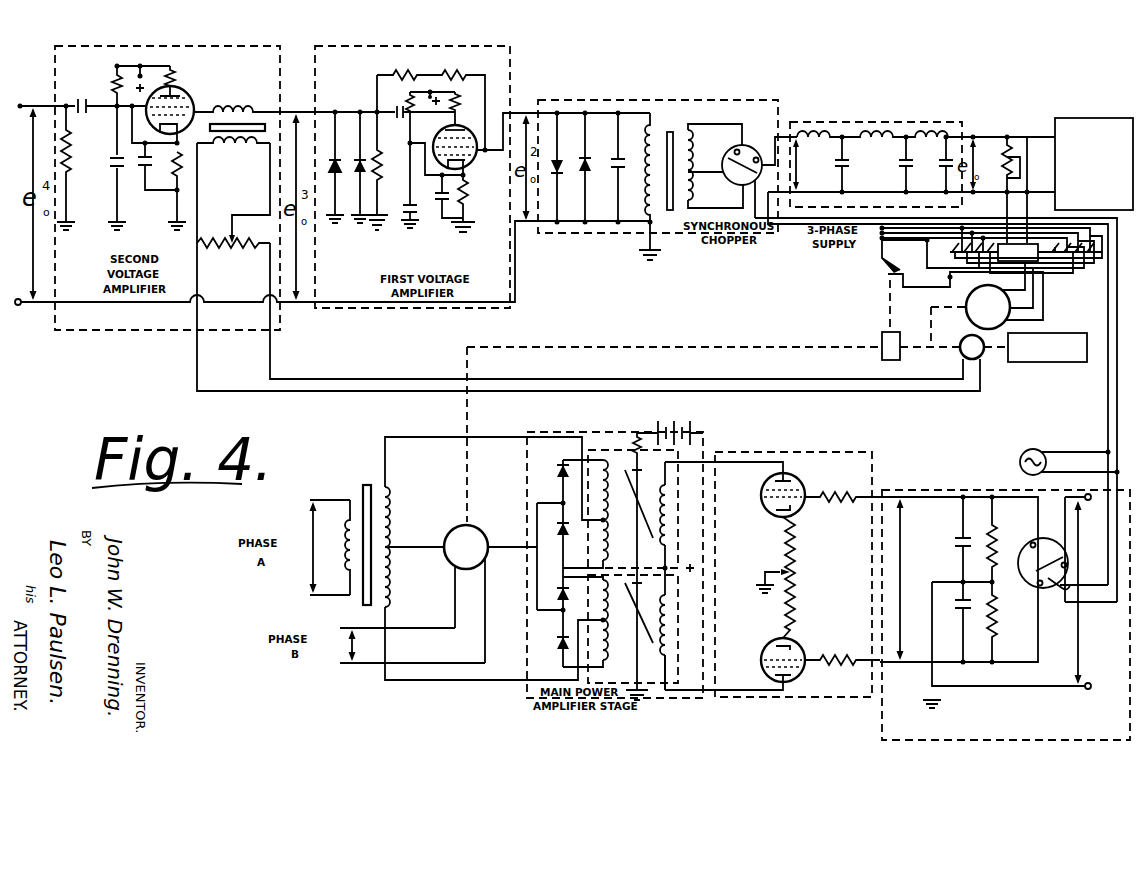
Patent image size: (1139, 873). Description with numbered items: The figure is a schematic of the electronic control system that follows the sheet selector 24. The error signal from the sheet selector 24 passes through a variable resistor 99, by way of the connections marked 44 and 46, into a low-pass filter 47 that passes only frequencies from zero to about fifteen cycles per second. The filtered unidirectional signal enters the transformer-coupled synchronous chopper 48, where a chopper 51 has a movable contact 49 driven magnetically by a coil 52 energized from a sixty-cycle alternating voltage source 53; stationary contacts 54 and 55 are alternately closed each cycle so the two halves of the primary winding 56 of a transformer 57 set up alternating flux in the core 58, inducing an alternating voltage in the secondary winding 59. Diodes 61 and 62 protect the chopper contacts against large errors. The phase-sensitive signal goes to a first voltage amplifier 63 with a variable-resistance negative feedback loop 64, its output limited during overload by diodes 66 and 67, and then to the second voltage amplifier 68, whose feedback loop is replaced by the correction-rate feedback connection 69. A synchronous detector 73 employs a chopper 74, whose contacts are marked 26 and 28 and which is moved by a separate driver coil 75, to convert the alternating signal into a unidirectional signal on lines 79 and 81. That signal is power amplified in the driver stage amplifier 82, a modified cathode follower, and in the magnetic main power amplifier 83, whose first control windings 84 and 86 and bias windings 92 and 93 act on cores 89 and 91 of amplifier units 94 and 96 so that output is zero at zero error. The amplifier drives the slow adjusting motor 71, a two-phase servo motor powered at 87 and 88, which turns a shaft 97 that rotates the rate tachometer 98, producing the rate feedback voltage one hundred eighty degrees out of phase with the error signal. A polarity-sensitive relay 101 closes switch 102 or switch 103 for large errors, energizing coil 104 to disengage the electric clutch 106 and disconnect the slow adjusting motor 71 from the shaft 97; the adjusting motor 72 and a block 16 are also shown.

The second voltage amplifier 68 is at (281, 96).
The correction-rate feedback connection 69 is at (190, 264).
The first voltage amplifier 63 is at (513, 79).
The variable resistance negative feedback loop 64 is at (430, 76).
The semi-conductor diode 67 is at (338, 161).
The semi-conductor diode 66 is at (362, 161).
The synchronous chopper 48 is at (604, 102).
The semi-conductor diode 62 is at (558, 164).
The semi-conductor diode 61 is at (588, 160).
The secondary winding 59 is at (644, 152).
The core 58 is at (656, 240).
The transformer 57 is at (679, 134).
The movable contact 49 is at (728, 169).
The stationary contact 55 is at (706, 164).
The chopper 51 is at (730, 158).
The stationary contact 54 is at (731, 144).
The primary winding 56 is at (752, 157).
The coil 52 is at (746, 199).
The filter 47 is at (850, 123).
The variable resistor 99 is at (1010, 162).
The output lead 44 is at (1020, 135).
The junction 46 is at (1031, 192).
The sheet selector 24 is at (1103, 181).
The switch 102 is at (989, 248).
The switch 103 is at (1061, 247).
The polarity-sensitive relay 101 is at (1018, 252).
The coil 104 is at (879, 272).
The electric clutch 106 is at (880, 338).
The shaft 97 is at (737, 337).
The adjusting motor 72 is at (966, 319).
The rate tachometer 98 is at (961, 343).
The controlled device 16 is at (1056, 357).
The servo motor power 87 is at (341, 500).
The servo motor power 88 is at (376, 602).
The slow adjusting motor 71 is at (480, 536).
The main power amplifier 83 is at (578, 433).
The core 89 is at (606, 475).
The core 91 is at (632, 623).
The control winding 92 is at (641, 490).
The control winding 93 is at (643, 612).
The control winding 84 is at (673, 509).
The control winding 86 is at (673, 622).
The amplifier 94 is at (682, 514).
The amplifier 96 is at (684, 670).
The driver stage amplifier 82 is at (818, 446).
The synchronous detector 73 is at (1005, 604).
The line 81 is at (943, 498).
The line 79 is at (917, 663).
The chopper 74 is at (1004, 602).
The chopper 26 is at (1038, 578).
The chopper contacts 28 is at (1034, 542).
The coil 75 is at (1064, 596).
The alternating voltage source 53 is at (1022, 455).